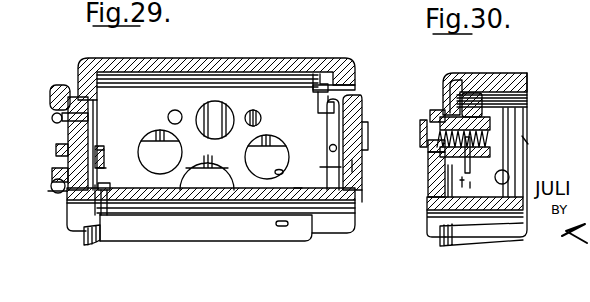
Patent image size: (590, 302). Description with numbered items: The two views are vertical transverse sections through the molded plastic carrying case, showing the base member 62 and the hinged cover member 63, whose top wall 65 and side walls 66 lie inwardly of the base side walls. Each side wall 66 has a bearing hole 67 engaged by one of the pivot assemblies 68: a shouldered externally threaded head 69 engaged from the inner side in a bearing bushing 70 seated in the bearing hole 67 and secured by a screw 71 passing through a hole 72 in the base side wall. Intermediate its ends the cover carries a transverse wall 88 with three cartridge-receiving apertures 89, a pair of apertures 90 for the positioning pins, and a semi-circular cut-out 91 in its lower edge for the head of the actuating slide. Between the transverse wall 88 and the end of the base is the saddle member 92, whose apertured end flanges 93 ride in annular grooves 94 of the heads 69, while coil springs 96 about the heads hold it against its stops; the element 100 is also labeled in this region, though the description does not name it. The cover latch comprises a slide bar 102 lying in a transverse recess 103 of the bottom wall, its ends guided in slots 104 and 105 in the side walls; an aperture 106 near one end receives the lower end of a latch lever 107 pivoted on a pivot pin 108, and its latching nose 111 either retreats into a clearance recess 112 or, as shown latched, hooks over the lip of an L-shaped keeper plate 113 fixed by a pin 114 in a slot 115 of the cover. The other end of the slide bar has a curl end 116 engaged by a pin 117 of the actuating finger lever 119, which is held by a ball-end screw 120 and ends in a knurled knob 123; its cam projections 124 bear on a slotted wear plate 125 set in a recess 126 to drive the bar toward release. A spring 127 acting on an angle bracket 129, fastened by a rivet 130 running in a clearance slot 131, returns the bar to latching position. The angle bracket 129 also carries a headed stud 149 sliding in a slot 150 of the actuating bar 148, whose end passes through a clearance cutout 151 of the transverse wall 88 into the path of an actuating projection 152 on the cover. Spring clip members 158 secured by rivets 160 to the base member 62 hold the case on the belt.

In FIG. 30, the base member 62 is at (432, 205).
In FIG. 29, the cover member 63 is at (250, 46).
In FIG. 30, the cover member 63 is at (530, 62).
In FIG. 29, the top wall 65 is at (163, 66).
In FIG. 30, the top wall 65 is at (502, 80).
In FIG. 30, the side walls 66 is at (446, 108).
In FIG. 30, the bearing holes 67 is at (443, 103).
In FIG. 30, the pivot assemblies 68 is at (496, 136).
In FIG. 30, the shouldered externally threaded head 69 is at (491, 132).
In FIG. 30, the bearing bushing 70 is at (445, 153).
In FIG. 30, the screw 71 is at (421, 143).
In FIG. 30, the hole 72 is at (440, 158).
In FIG. 29, the transverse wall 88 is at (145, 96).
In FIG. 29, the apertures 89 is at (229, 104).
In FIG. 29, the apertures 90 is at (259, 113).
In FIG. 29, the semi-circular cut-out 91 is at (212, 156).
In FIG. 29, the saddle member 92 is at (260, 147).
In FIG. 30, the saddle member 92 is at (526, 108).
In FIG. 30, the apertured end flanges 93 is at (472, 169).
In FIG. 30, the annular grooves 94 is at (526, 140).
In FIG. 30, the coil springs 96 is at (472, 112).
In FIG. 30, the gasket 100 is at (457, 95).
In FIG. 29, the slide bar 102 is at (298, 188).
In FIG. 29, the transverse recess 103 is at (311, 191).
In FIG. 29, the slot 104 is at (352, 166).
In FIG. 29, the slot 105 is at (96, 202).
In FIG. 29, the aperture 106 is at (338, 191).
In FIG. 29, the latch lever 107 is at (333, 166).
In FIG. 29, the pivot pin 108 is at (330, 148).
In FIG. 29, the latching nose 111 is at (334, 110).
In FIG. 29, the clearance recess 112 is at (359, 116).
In FIG. 29, the L-shaped keeper plate 113 is at (319, 104).
In FIG. 29, the pin 114 is at (355, 82).
In FIG. 29, the slot 115 is at (322, 80).
In FIG. 29, the curl end 116 is at (60, 193).
In FIG. 29, the pin 117 is at (52, 186).
In FIG. 29, the actuating finger lever 119 is at (68, 135).
In FIG. 29, the ball-end screw 120 is at (52, 116).
In FIG. 29, the knurled knob 123 is at (60, 85).
In FIG. 29, the cam projection 124 is at (69, 208).
In FIG. 29, the slotted wear plate 125 is at (76, 207).
In FIG. 29, the recess 126 is at (86, 233).
In FIG. 29, the spring 127 is at (102, 138).
In FIG. 29, the angle bracket 129 is at (106, 152).
In FIG. 29, the rivet 130 is at (143, 162).
In FIG. 29, the clearance slot 131 is at (102, 223).
In FIG. 29, the actuating bar 148 is at (106, 200).
In FIG. 29, the headed stud 149 is at (104, 168).
In FIG. 29, the slot 150 is at (104, 155).
In FIG. 29, the clearance cutout 151 is at (56, 172).
In FIG. 29, the actuating projection 152 is at (60, 150).
In FIG. 30, the actuating projection 152 is at (502, 182).
In FIG. 29, the spring clip members 158 is at (230, 241).
In FIG. 29, the rivets 160 is at (282, 227).